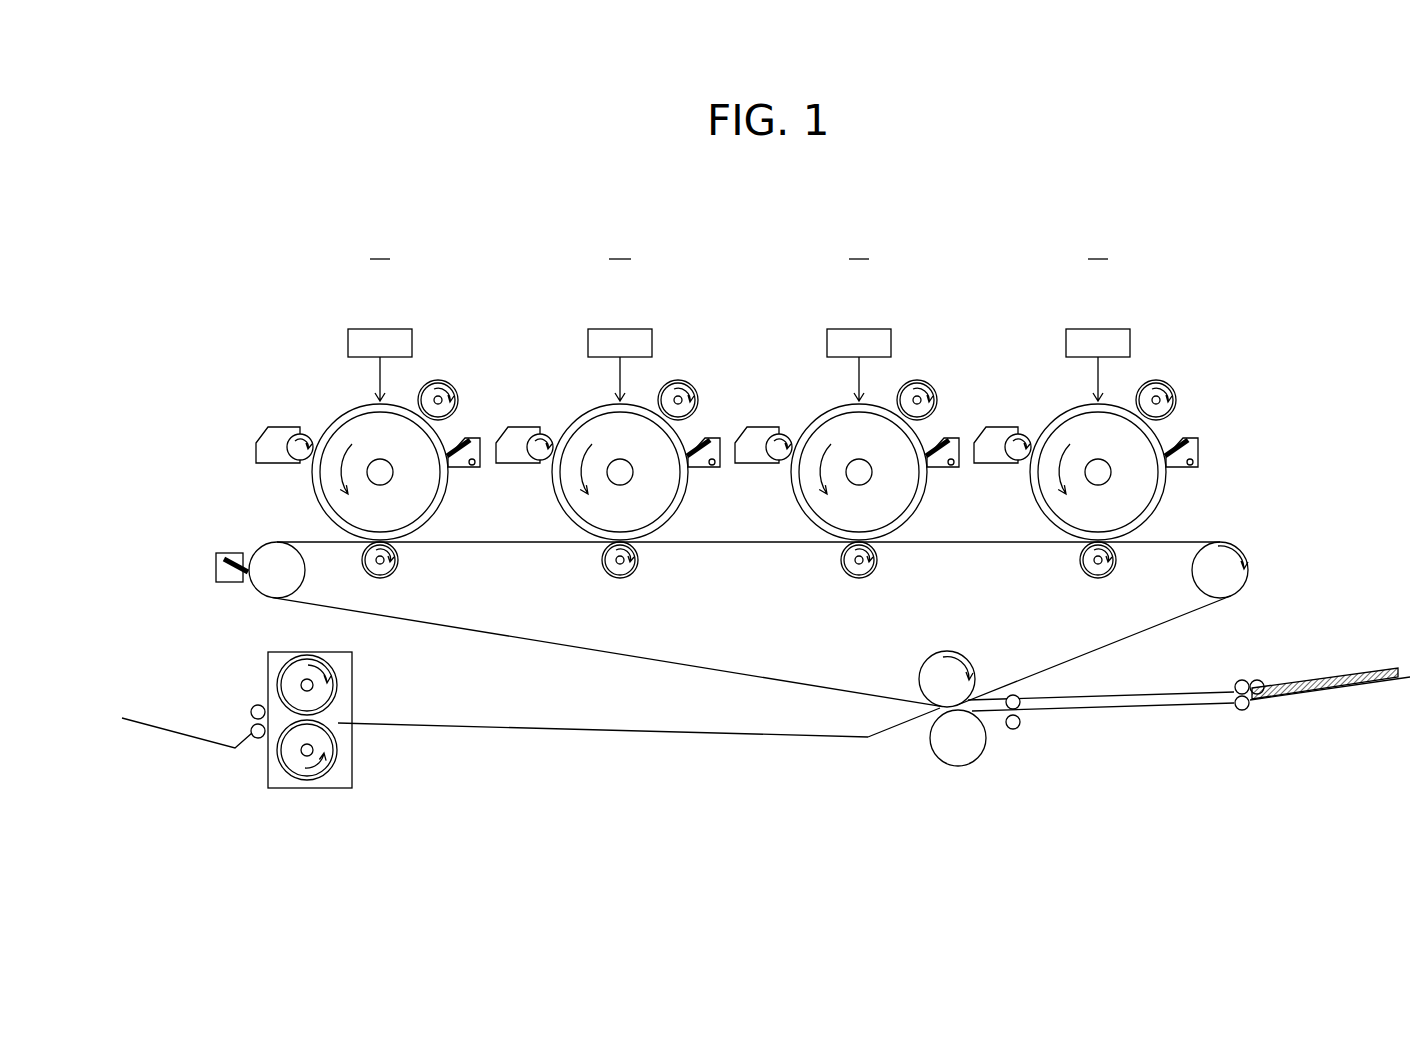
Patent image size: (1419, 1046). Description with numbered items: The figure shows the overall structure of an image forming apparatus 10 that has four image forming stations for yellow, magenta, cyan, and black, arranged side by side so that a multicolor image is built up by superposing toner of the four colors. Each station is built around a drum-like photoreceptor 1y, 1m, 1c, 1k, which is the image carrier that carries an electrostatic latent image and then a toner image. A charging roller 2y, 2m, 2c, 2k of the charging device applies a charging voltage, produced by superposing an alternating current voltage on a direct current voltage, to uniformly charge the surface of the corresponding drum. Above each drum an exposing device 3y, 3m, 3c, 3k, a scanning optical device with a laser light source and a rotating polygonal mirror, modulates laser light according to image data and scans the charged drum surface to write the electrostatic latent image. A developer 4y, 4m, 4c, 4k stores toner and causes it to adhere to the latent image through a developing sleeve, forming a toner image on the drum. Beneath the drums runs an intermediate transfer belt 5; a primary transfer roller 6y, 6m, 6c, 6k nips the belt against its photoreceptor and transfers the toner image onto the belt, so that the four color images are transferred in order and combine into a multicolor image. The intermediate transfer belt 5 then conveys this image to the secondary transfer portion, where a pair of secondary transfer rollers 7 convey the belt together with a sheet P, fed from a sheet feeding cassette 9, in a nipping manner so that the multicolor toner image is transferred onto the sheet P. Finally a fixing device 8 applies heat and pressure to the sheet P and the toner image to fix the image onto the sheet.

The image forming apparatus 10 is at (1178, 187).
The photoreceptor 1y is at (319, 497).
The photoreceptor 1m is at (559, 497).
The photoreceptor 1c is at (798, 497).
The photoreceptor 1k is at (1037, 497).
The charging roller 2y is at (452, 386).
The charging roller 2m is at (692, 386).
The charging roller 2c is at (931, 386).
The charging roller 2k is at (1170, 386).
The exposing device 3y is at (400, 337).
The exposing device 3m is at (640, 337).
The exposing device 3c is at (879, 337).
The exposing device 3k is at (1118, 337).
The developer 4y is at (268, 440).
The developer 4m is at (508, 440).
The developer 4c is at (747, 440).
The developer 4k is at (986, 440).
The intermediate transfer belt 5 is at (672, 660).
The primary transfer roller 6y is at (398, 566).
The primary transfer roller 6m is at (638, 566).
The primary transfer roller 6c is at (877, 566).
The primary transfer roller 6k is at (1116, 566).
The secondary transfer rollers 7 is at (942, 743).
The fixing device 8 is at (358, 695).
The sheet feeding cassette 9 is at (1313, 693).
The sheet P is at (1298, 683).